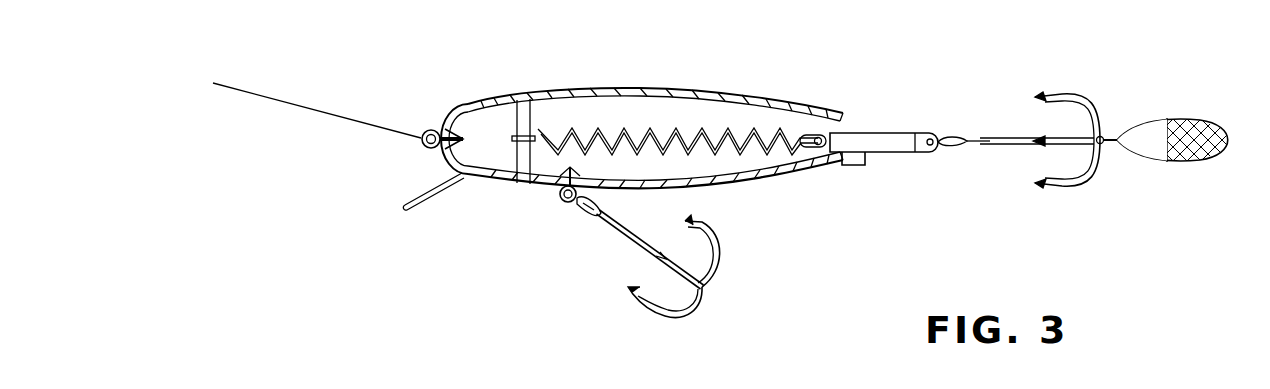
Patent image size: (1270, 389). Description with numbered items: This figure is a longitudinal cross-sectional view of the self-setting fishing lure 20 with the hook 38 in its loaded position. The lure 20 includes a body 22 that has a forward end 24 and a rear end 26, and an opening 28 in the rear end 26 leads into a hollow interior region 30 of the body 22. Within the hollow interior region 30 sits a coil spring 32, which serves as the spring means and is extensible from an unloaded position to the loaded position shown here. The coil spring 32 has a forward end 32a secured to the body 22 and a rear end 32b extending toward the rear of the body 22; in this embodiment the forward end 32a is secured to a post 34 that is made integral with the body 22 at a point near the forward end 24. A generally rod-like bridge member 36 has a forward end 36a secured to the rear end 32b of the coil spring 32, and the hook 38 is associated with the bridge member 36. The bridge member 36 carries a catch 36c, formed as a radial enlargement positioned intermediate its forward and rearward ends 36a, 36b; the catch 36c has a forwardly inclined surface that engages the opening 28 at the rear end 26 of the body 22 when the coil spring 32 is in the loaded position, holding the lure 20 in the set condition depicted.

The self-setting fishing lure 20 is at (615, 72).
The body 22 is at (663, 92).
The forward end 24 is at (467, 106).
The rear end 26 is at (818, 136).
The opening 28 is at (833, 127).
The hollow interior region 30 is at (702, 110).
The coil spring 32 is at (702, 154).
The forward end of the coil spring 32a is at (518, 184).
The rear end of the coil spring 32b is at (814, 143).
The post 34 is at (523, 103).
The bridge member 36 is at (898, 132).
The forward end of the bridge member 36a is at (822, 153).
The rearward end of the bridge member 36b is at (920, 153).
The catch 36c is at (852, 166).
The hook 38 is at (1055, 90).